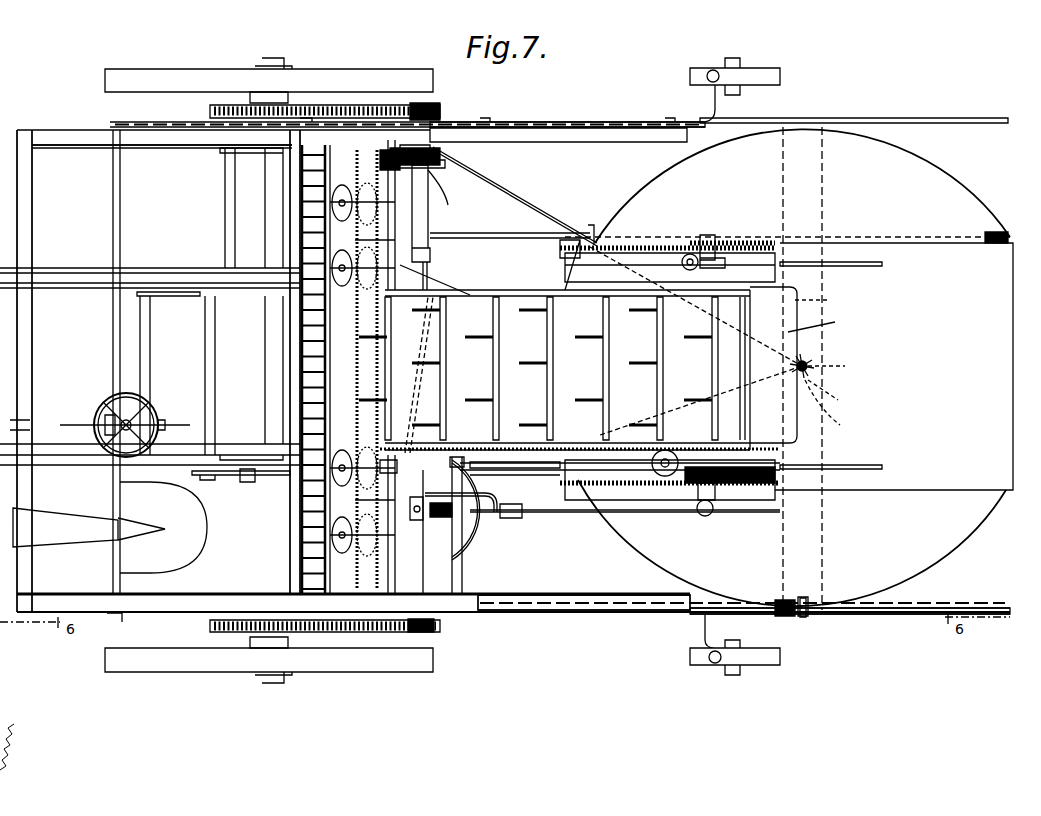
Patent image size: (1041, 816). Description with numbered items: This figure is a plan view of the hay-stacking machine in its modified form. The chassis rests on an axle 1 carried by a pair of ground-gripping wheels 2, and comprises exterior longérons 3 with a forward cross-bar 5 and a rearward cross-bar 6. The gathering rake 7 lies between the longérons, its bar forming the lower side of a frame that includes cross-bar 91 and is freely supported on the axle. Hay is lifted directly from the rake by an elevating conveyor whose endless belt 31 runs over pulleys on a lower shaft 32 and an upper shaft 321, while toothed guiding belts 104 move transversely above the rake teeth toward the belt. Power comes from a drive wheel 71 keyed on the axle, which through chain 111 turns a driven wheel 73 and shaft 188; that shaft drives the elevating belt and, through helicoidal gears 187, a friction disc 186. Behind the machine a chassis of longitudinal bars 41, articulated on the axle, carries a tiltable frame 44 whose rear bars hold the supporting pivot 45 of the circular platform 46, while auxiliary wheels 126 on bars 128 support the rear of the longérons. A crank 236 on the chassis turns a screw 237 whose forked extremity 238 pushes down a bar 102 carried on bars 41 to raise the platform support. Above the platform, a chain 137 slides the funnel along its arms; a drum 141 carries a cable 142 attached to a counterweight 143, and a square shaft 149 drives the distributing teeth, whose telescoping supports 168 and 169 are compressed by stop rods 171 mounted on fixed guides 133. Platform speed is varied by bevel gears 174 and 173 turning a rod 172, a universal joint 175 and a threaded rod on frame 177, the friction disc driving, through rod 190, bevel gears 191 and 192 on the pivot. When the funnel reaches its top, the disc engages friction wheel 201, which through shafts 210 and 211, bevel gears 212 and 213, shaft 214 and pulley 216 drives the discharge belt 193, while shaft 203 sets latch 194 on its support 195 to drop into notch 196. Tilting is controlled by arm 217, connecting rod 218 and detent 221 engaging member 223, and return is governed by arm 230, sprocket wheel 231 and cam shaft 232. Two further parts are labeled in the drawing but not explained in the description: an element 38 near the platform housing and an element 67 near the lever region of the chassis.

The axle 1 is at (295, 680).
The wheels 2 is at (190, 662).
The longérons 3 is at (183, 140).
The cross-bar 5 is at (35, 315).
The cross-bar 6 is at (292, 338).
The rake 7 is at (315, 405).
The endless belt 31 is at (462, 295).
The lower shaft 32 is at (398, 318).
The upper shaft 321 is at (720, 242).
The wheel housing box 38 is at (823, 325).
The longitudinal bars 41 is at (845, 112).
The frame 44 is at (822, 206).
The supporting pivot 45 is at (832, 396).
The platform 46 is at (958, 188).
The lever 67 is at (205, 480).
The drive wheel 71 is at (210, 626).
The driven wheel 73 is at (436, 628).
The cross-bar 91 is at (228, 208).
The bar 102 is at (118, 205).
The endless belts 104 is at (330, 508).
The chain 111 is at (360, 620).
The auxiliary wheels 126 is at (795, 657).
The bars 128 is at (612, 628).
The fixed guides 133 is at (690, 535).
The chain 137 is at (650, 552).
The drum 141 is at (745, 490).
The cable 142 is at (730, 440).
The counterweight 143 is at (672, 398).
The square shaft 149 is at (722, 250).
The tubular supporting bars 168 is at (700, 538).
The tubular supports 169 is at (640, 256).
The rods 171 is at (845, 490).
The rod 172 is at (585, 510).
The bevel gear 173 is at (713, 512).
The bevel gear 174 is at (715, 492).
The universal joint 175 is at (560, 515).
The frame 177 is at (495, 476).
The friction disc 186 is at (488, 522).
The helicoidal gears 187 is at (418, 520).
The shaft 188 is at (475, 578).
The rod 190 is at (525, 495).
The bevel gear 191 is at (836, 404).
The bevel gear 192 is at (810, 372).
The endless belt 193 is at (990, 283).
The latch 194 is at (806, 612).
The support 195 is at (780, 616).
The notch 196 is at (808, 600).
The friction wheel 201 is at (440, 408).
The shaft 203 is at (455, 572).
The shaft 210 is at (430, 377).
The shaft 211 is at (520, 198).
The bevel gear 212 is at (820, 358).
The bevel gear 213 is at (841, 367).
The shaft 214 is at (830, 302).
The pulley 216 is at (1005, 228).
The arm 217 is at (726, 296).
The connecting rod 218 is at (488, 290).
The detent 221 is at (432, 168).
The member 223 is at (451, 191).
The arm 230 is at (505, 235).
The sprocket wheel 231 is at (430, 115).
The cam shaft 232 is at (428, 220).
The crank 236 is at (160, 425).
The screw 237 is at (105, 395).
The forked extremity 238 is at (105, 425).